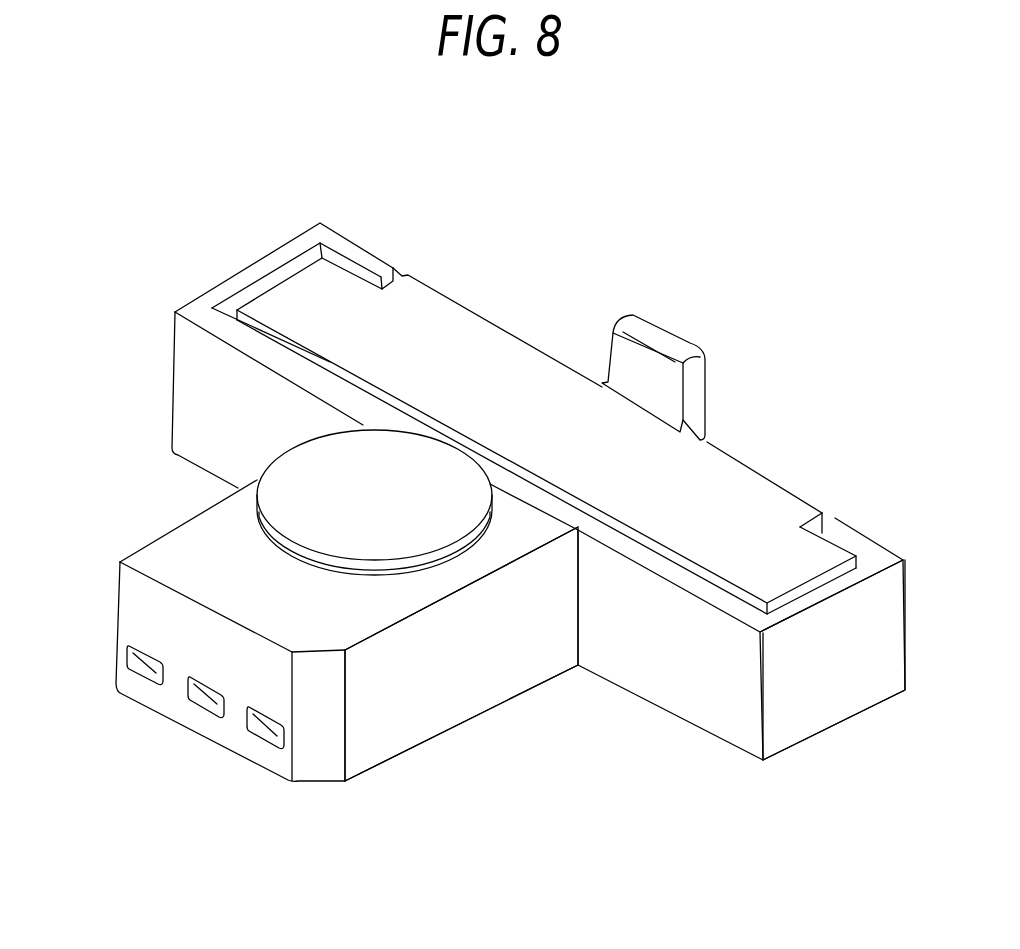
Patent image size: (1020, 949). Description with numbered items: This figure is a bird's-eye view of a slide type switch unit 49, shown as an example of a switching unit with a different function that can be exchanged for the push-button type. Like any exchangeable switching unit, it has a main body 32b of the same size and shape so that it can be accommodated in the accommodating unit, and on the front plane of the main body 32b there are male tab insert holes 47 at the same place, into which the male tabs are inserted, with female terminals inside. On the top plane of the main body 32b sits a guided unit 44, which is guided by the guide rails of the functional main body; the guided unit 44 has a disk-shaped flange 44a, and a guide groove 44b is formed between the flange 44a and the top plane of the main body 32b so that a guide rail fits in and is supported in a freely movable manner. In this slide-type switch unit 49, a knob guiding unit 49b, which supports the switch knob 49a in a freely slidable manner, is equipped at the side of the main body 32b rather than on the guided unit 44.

The slide type switch unit 49 is at (247, 200).
The switch knob 49a is at (668, 338).
The knob guiding unit 49b is at (833, 668).
The guided unit 44 is at (72, 343).
The disk-shaped flange 44a is at (310, 465).
The guide groove 44b is at (290, 552).
The main body 32b is at (418, 712).
The male tab insert holes 47 is at (265, 732).